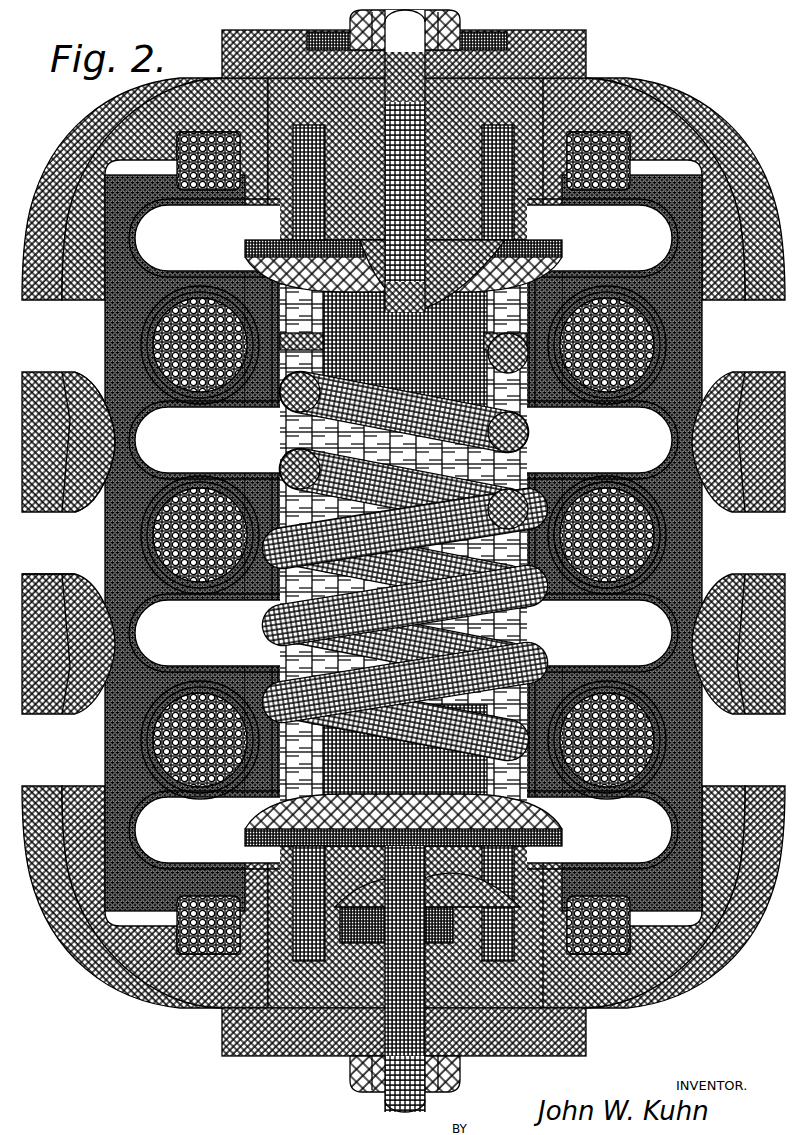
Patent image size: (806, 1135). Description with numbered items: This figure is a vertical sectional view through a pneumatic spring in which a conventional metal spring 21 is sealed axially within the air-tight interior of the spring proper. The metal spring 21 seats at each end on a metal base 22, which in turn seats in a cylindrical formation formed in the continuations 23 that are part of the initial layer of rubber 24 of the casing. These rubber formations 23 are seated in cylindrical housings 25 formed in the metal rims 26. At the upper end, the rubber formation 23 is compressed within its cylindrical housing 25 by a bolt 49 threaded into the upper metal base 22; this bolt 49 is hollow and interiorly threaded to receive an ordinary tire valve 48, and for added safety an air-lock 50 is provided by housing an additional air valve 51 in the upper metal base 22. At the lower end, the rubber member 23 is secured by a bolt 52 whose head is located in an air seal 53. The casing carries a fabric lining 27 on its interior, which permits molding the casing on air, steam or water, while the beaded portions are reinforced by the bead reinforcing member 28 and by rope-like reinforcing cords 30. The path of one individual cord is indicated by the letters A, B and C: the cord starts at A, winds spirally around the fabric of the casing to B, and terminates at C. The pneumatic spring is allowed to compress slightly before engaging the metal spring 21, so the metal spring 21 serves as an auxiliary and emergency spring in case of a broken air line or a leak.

The metal spring 21 is at (510, 494).
The metal base 22 is at (567, 248).
The continuations 23 is at (512, 97).
The initial layer of rubber 24 is at (677, 647).
The cylindrical housings 25 is at (555, 110).
The metal rims 26 is at (766, 172).
The fabric lining 27 is at (680, 455).
The bead reinforcing member 28 is at (112, 732).
The reinforcing cords 30 is at (660, 548).
The tire valve 48 is at (388, 42).
The bolt 49 is at (445, 34).
The air-lock 50 is at (386, 258).
The additional air valve 51 is at (432, 278).
The bolt 52 is at (437, 1097).
The air seal 53 is at (360, 910).
The cord starting position A is at (110, 500).
The cord intermediate position B is at (545, 548).
The cord terminating position C is at (92, 576).